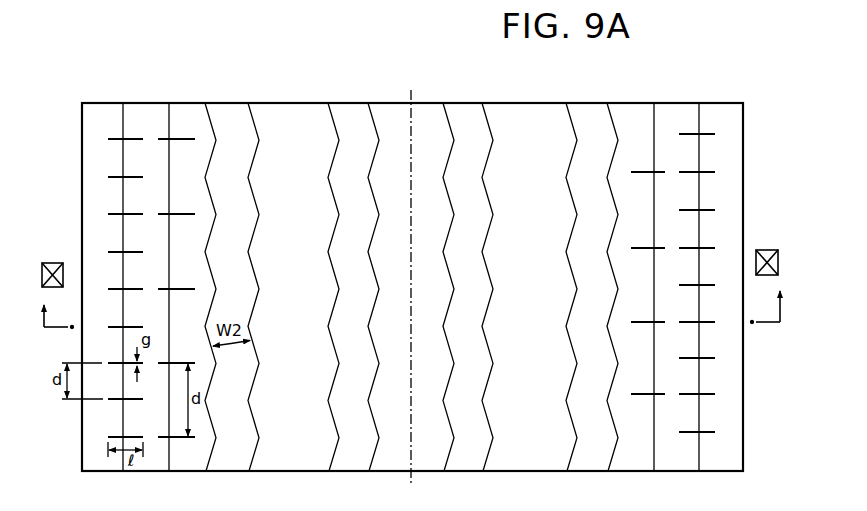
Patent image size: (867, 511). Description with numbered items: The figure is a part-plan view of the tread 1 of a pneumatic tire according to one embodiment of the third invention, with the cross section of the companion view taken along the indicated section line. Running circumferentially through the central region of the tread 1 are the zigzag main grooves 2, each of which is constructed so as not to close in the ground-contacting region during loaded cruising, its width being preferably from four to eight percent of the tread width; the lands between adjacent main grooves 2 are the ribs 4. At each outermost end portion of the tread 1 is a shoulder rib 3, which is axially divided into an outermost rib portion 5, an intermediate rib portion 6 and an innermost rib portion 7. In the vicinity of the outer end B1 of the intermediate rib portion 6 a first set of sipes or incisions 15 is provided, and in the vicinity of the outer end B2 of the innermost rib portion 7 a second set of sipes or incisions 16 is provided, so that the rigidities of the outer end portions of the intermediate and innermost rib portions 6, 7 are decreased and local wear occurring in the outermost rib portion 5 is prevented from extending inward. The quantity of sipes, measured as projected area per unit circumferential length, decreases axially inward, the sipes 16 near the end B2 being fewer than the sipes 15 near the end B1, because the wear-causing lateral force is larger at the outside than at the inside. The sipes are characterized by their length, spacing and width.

The tread 1 is at (445, 68).
The main groove 2 is at (233, 103).
The shoulder rib 3 is at (80, 86).
The zigzag strip 4 is at (291, 103).
The outermost rib portion 5 is at (93, 132).
The intermediate rib portion 6 is at (138, 132).
The innermost rib portion 7 is at (177, 132).
The first set of sipes or incisions 15 is at (116, 213).
The second set of sipes or incisions 16 is at (178, 213).
The outer end of the intermediate rib portion B1 is at (122, 268).
The outer end of the innermost rib portion B2 is at (172, 268).